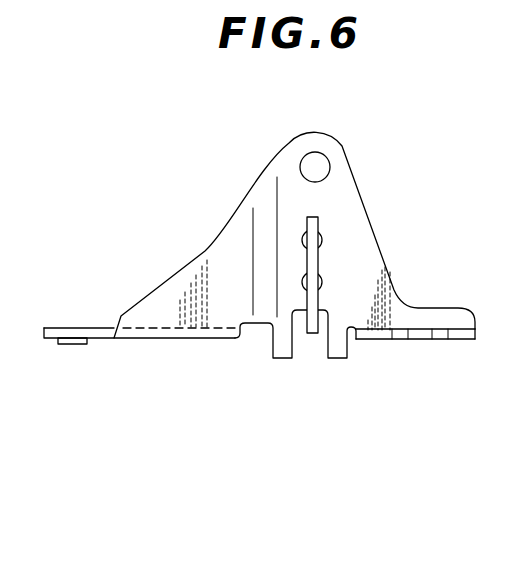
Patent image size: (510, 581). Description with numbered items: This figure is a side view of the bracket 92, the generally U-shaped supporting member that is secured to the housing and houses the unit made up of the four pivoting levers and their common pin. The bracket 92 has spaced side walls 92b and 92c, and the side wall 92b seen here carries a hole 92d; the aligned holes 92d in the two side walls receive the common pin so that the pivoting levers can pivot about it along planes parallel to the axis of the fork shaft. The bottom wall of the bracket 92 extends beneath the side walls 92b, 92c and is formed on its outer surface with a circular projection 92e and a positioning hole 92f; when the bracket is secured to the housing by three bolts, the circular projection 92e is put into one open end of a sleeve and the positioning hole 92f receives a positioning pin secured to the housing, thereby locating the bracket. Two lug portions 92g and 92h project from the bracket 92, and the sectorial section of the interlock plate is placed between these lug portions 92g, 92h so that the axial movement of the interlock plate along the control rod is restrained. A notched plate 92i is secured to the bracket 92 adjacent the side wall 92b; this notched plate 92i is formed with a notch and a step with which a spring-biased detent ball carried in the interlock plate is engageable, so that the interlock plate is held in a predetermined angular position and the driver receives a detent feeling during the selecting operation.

The bracket 92 is at (380, 185).
The side wall 92b is at (347, 228).
The side wall 92c is at (95, 335).
The hole 92d is at (328, 163).
The circular projection 92e is at (67, 344).
The positioning hole 92f is at (457, 333).
The lug portion 92g is at (335, 353).
The lug portion 92h is at (285, 352).
The notched plate 92i is at (310, 262).